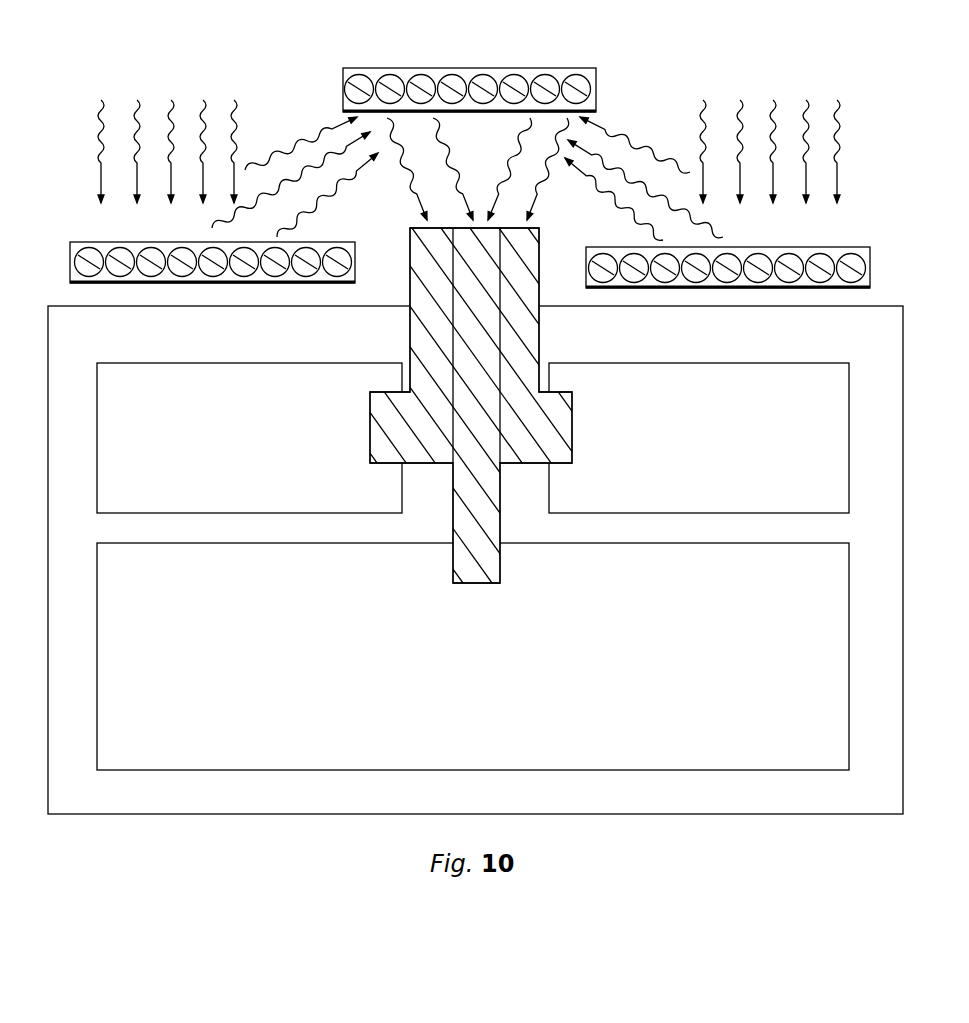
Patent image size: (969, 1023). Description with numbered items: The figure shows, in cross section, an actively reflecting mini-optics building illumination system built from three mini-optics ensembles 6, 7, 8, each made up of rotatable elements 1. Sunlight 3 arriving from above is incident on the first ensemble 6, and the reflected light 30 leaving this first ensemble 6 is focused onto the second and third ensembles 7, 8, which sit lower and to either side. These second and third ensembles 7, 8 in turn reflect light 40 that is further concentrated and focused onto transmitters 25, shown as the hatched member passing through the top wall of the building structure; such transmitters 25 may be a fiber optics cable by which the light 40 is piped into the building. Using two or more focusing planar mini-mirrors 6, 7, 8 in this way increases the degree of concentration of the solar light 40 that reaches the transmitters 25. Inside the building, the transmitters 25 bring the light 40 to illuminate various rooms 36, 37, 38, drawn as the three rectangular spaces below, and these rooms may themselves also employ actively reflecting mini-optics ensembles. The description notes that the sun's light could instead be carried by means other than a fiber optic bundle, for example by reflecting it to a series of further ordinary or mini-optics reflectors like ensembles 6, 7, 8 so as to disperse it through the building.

The rotatable elements 1 is at (473, 178).
The sunlight 3 is at (232, 92).
The first mini-optics ensemble 6 is at (630, 104).
The second mini-optics ensemble 7 is at (380, 277).
The third mini-optics ensemble 8 is at (905, 284).
The transmitters 25 is at (410, 327).
The reflected light 30 is at (322, 203).
The room 36 is at (230, 365).
The room 37 is at (700, 368).
The room 38 is at (631, 545).
The light 40 is at (392, 167).